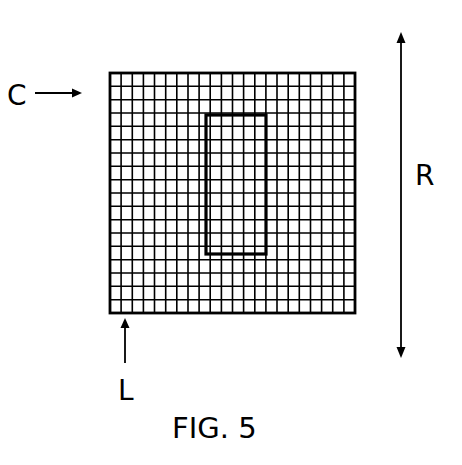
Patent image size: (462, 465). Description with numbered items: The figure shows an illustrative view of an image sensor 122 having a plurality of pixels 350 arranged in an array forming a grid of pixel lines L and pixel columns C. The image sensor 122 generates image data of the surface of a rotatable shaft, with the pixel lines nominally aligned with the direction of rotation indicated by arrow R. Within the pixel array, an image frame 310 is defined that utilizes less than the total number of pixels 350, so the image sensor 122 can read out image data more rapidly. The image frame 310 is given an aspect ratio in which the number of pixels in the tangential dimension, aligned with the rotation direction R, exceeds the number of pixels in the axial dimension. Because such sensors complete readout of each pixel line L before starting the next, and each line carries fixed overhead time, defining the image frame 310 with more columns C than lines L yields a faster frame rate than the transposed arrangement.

The pixels 350 is at (172, 89).
The image frame 310 is at (237, 113).
The image sensor 122 is at (111, 214).